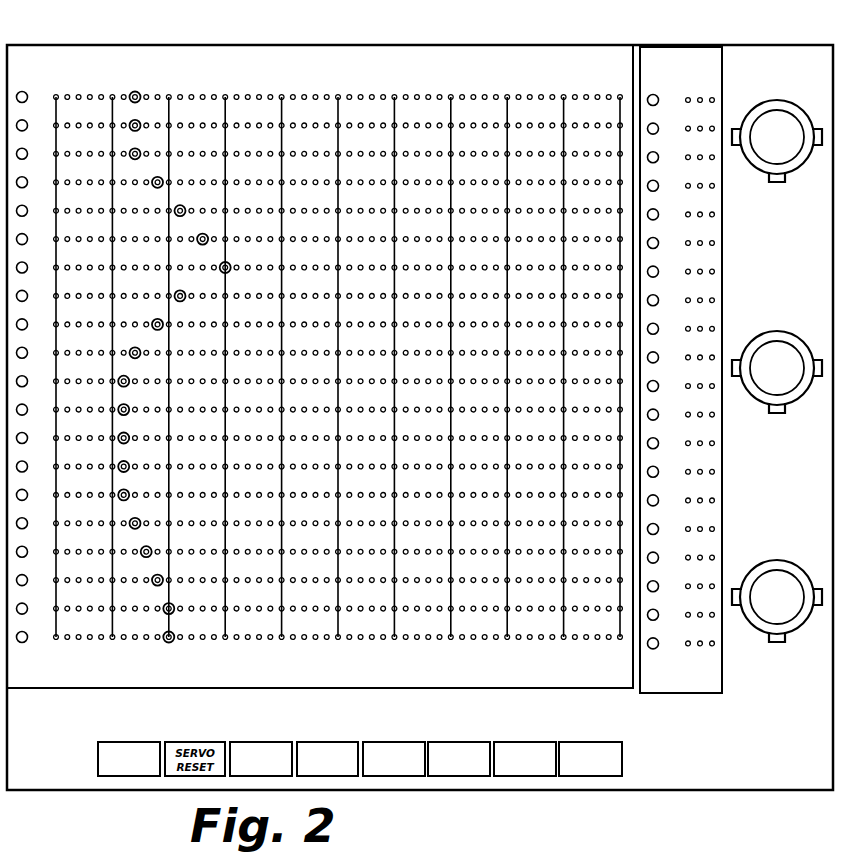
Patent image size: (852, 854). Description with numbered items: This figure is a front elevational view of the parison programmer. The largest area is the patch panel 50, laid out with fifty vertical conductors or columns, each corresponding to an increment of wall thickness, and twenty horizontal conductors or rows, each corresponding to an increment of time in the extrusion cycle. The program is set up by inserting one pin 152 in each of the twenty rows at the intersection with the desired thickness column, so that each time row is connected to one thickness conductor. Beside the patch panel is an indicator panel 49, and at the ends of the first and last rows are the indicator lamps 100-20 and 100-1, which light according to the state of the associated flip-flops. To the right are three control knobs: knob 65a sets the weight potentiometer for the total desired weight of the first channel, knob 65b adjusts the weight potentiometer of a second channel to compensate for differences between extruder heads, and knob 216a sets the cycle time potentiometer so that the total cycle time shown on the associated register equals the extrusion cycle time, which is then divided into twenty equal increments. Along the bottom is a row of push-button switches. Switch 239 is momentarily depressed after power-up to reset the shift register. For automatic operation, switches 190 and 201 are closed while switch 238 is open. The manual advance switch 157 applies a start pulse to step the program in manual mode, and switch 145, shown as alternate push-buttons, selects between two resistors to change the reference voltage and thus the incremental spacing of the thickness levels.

The patch panel 50 is at (311, 88).
The indicator panel 49 is at (665, 86).
The pin 152 is at (135, 120).
The step 20 indicator lamp 100-20 is at (26, 92).
The step 1 indicator lamp 100-1 is at (22, 643).
The knob 65a is at (802, 104).
The knob 65b is at (808, 342).
The knob 216a is at (795, 565).
The switch 239 is at (150, 742).
The switch 201 is at (290, 722).
The switch 190 is at (290, 720).
The switch 238 is at (334, 742).
The manual advance switch 157 is at (397, 742).
The single-pole double-throw switch 145 is at (572, 742).